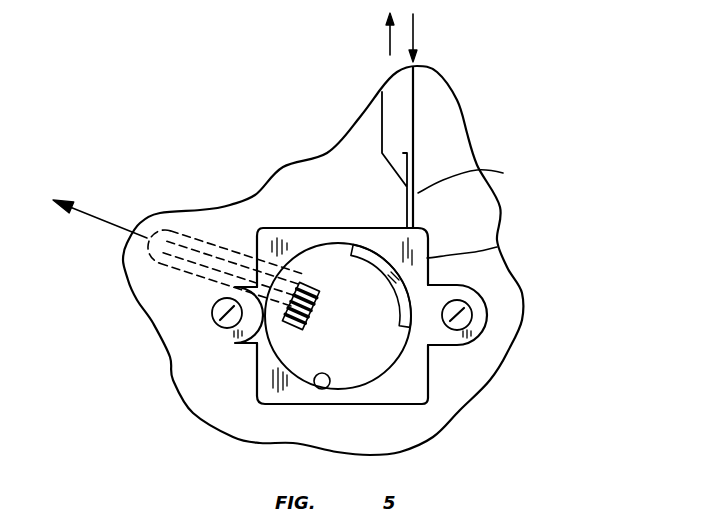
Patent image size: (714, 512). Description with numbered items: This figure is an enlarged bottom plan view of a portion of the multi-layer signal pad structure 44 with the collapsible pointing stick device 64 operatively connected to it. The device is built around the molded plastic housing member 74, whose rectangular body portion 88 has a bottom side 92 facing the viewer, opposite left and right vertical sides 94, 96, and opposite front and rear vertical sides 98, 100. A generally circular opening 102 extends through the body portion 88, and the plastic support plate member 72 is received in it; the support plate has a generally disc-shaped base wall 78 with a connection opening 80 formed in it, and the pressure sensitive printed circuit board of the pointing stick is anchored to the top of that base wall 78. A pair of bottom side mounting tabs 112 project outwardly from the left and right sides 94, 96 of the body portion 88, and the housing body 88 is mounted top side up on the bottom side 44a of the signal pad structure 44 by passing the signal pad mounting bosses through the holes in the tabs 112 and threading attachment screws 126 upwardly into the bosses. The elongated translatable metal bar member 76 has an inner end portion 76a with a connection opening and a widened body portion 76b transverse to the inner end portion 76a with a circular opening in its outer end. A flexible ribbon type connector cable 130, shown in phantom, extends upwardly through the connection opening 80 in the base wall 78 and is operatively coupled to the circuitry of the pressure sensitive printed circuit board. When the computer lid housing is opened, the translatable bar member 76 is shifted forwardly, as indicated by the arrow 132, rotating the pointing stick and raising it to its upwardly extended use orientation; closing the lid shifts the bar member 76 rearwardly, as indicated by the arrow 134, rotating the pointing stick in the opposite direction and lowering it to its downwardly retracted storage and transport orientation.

The signal pad structure 44 is at (473, 135).
The bottom side of signal pad structure 44a is at (492, 221).
The collapsible pointing stick device 64 is at (317, 182).
The support plate member 72 is at (328, 243).
The housing member 74 is at (447, 375).
The translatable bar member 76 is at (418, 95).
The inner end portion of translatable bar member 76a is at (481, 180).
The widened body portion of translatable bar member 76b is at (393, 120).
The base wall 78 is at (363, 315).
The connection opening 80 is at (298, 328).
The body portion 88 is at (403, 405).
The bottom side of body portion 92 is at (418, 392).
The left vertical side of body portion 94 is at (500, 243).
The right vertical side of body portion 96 is at (257, 375).
The front vertical side of body portion 98 is at (338, 405).
The rear vertical side of body portion 100 is at (308, 228).
The circular opening 102 is at (316, 388).
The bottom side mounting tabs 112 is at (480, 283).
The attachment screws 126 is at (200, 308).
The flexible ribbon type connector cable 130 is at (210, 232).
The arrow indicating forward shifting of translatable bar member 132 is at (413, 32).
The arrow indicating rearward shifting of translatable bar member 134 is at (385, 42).